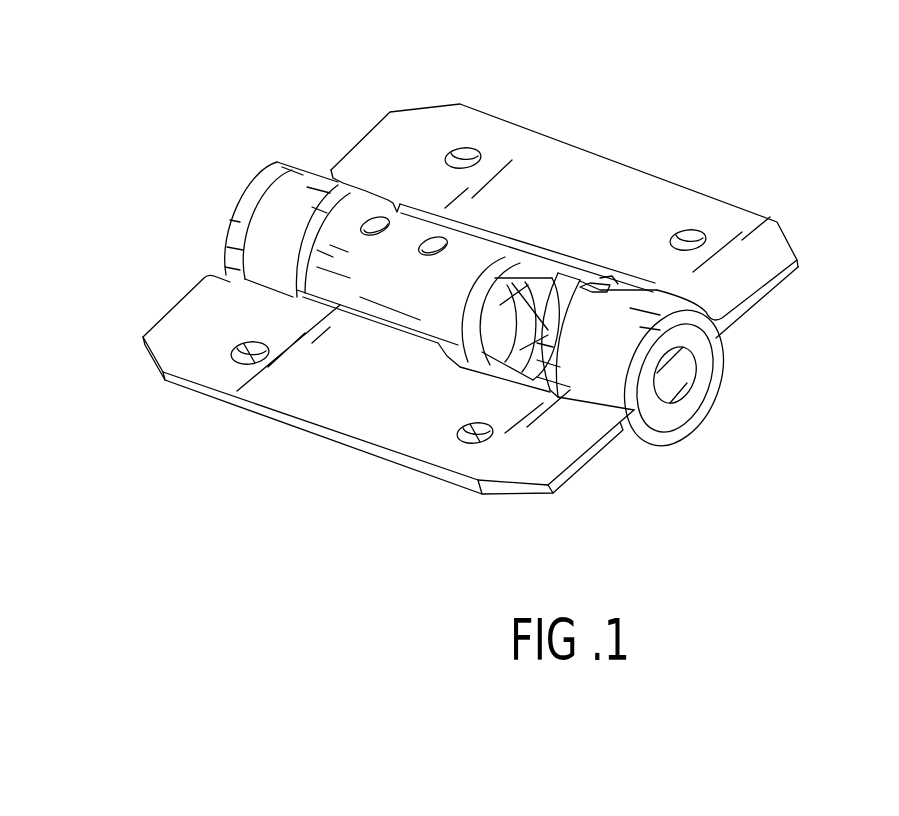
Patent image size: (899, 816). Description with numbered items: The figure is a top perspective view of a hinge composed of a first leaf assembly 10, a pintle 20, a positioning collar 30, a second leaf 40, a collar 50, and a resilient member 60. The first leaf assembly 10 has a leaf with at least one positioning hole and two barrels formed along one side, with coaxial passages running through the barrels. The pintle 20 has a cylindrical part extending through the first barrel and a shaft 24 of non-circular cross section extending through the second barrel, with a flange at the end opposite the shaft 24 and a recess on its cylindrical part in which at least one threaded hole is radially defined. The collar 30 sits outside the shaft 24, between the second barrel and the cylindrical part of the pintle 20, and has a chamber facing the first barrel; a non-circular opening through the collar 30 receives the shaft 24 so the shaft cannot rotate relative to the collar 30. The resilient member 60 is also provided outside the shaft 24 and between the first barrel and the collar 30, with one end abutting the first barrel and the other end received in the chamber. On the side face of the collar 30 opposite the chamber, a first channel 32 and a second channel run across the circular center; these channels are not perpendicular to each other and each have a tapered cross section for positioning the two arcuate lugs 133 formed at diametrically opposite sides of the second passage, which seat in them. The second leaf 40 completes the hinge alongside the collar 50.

The first leaf assembly 10 is at (573, 158).
The pintle 20 is at (237, 203).
The shaft 24 is at (678, 382).
The collar 30 is at (590, 268).
The first channel 32 is at (610, 280).
The second leaf 40 is at (330, 405).
The collar 50 is at (667, 423).
The resilient member 60 is at (512, 375).
The arcuate lugs 133 is at (587, 290).